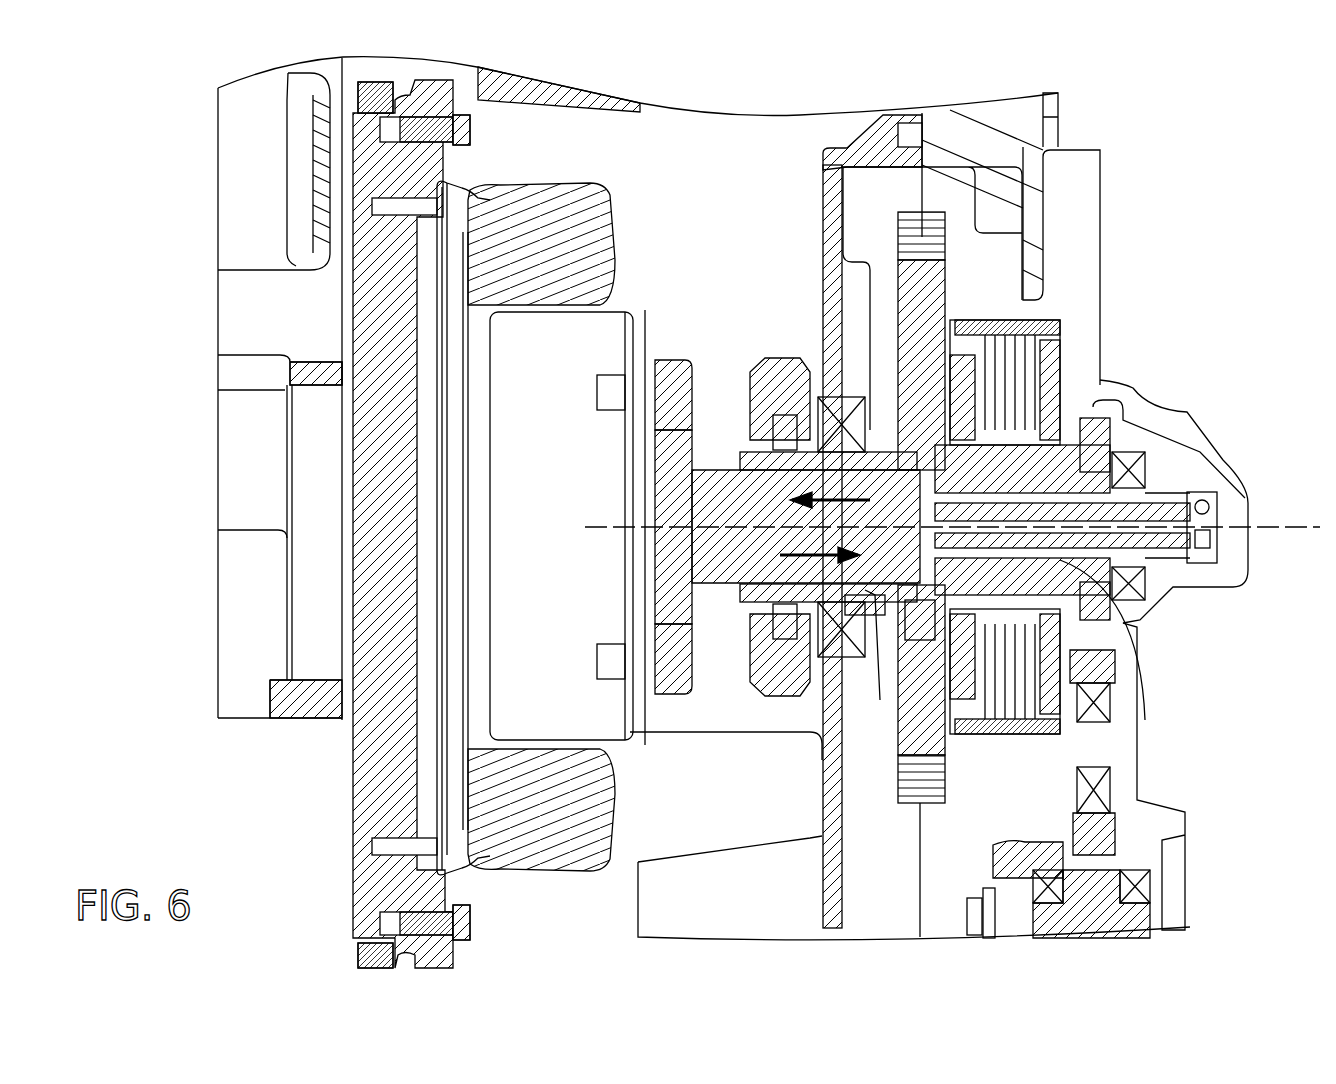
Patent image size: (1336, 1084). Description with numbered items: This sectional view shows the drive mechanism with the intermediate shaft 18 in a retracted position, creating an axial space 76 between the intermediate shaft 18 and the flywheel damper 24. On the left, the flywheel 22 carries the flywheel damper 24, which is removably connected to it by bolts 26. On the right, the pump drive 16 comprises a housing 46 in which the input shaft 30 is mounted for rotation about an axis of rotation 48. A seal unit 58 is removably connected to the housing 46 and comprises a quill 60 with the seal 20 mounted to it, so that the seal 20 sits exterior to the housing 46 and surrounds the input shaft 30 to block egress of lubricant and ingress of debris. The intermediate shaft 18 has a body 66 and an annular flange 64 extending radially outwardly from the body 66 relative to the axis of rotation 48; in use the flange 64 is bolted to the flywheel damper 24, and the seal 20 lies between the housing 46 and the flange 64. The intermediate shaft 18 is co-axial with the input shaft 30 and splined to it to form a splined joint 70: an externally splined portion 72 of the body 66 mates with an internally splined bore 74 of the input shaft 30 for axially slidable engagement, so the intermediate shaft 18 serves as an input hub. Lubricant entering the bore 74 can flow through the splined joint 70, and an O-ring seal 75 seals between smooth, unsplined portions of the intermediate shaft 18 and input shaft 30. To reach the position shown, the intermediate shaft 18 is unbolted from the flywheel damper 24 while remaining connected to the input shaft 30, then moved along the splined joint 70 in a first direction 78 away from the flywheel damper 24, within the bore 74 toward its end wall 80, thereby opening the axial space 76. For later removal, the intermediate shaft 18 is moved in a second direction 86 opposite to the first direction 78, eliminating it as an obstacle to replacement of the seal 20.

The pump drive 16 is at (800, 178).
The intermediate shaft 18 is at (724, 645).
The seal 20 is at (765, 420).
The flywheel 22 is at (372, 805).
The flywheel damper 24 is at (528, 815).
The bolts 26 is at (470, 130).
The input shaft 30 is at (1000, 575).
The housing 46 is at (828, 218).
The axis of rotation 48 is at (1312, 524).
The seal unit 58 is at (748, 372).
The quill 60 is at (768, 360).
The annular flange 64 is at (660, 365).
The body 66 is at (740, 505).
The splined joint 70 is at (893, 613).
The externally splined portion 72 is at (875, 432).
The internally splined bore 74 is at (922, 493).
The O-ring seal 75 is at (770, 470).
The axial space 76 is at (645, 625).
The first direction 78 is at (790, 556).
The end wall 80 is at (905, 600).
The second direction 86 is at (780, 510).